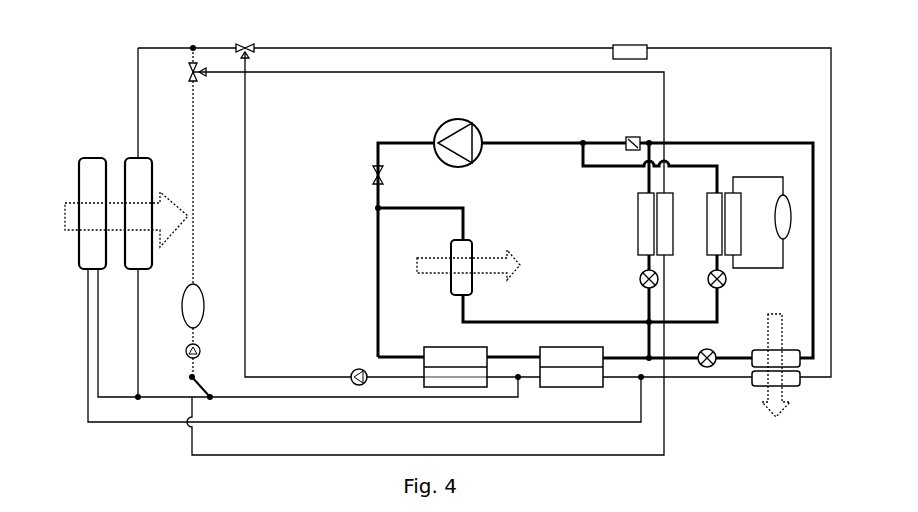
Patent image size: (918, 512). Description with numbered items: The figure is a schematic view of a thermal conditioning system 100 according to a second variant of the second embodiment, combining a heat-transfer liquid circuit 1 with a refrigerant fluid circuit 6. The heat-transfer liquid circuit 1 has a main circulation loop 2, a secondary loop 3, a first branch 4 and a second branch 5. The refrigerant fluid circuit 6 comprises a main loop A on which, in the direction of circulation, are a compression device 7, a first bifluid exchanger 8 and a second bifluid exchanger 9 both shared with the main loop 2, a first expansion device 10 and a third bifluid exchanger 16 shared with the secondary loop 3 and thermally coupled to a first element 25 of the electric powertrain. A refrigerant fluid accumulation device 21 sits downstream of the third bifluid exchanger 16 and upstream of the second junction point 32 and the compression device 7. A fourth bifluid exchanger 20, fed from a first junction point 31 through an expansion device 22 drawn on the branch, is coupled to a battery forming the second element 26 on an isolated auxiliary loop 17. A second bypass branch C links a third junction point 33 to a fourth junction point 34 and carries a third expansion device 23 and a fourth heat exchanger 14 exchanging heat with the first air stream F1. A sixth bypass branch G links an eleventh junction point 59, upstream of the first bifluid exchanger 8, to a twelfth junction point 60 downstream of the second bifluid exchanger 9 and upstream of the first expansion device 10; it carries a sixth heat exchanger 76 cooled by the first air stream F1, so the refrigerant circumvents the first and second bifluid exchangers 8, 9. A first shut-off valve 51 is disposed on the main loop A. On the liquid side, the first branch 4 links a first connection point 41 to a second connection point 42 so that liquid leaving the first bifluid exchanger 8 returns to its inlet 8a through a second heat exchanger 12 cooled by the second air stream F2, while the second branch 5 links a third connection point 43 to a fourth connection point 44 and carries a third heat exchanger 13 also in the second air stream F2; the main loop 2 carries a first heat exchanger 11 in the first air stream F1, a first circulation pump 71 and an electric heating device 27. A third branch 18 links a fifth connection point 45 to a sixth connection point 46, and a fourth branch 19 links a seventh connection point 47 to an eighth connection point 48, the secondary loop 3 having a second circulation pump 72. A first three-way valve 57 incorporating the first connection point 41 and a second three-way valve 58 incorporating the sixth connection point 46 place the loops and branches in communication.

The thermal conditioning system 100 is at (420, 32).
The heat-transfer liquid circuit 1 is at (672, 84).
The main circulation loop 2 is at (829, 82).
The secondary loop 3 is at (195, 113).
The first branch 4 is at (136, 95).
The second branch 5 is at (90, 335).
The refrigerant fluid circuit 6 is at (500, 150).
The compression device 7 is at (455, 140).
The first bifluid exchanger 8 is at (605, 168).
The inlet of the first bifluid exchanger 8a is at (490, 377).
The second bifluid exchanger 9 is at (590, 355).
The first expansion device 10 is at (640, 279).
The first heat exchanger 11 is at (795, 382).
The second heat exchanger 12 is at (140, 168).
The third heat exchanger 13 is at (93, 187).
The fourth heat exchanger 14 is at (790, 360).
The third bifluid exchanger 16 is at (636, 225).
The auxiliary loop 17 is at (760, 268).
The third branch 18 is at (188, 70).
The fourth branch 19 is at (204, 387).
The fourth bifluid exchanger 20 is at (715, 230).
The refrigerant fluid accumulation device 21 is at (626, 140).
The expansion valve 22 is at (710, 272).
The third expansion device 23 is at (712, 349).
The first element of the electric powertrain 25 is at (190, 298).
The second element of the electric powertrain 26 is at (783, 226).
The electric heating device 27 is at (650, 52).
The first junction point 31 is at (652, 318).
The second junction point 32 is at (581, 147).
The third junction point 33 is at (652, 356).
The fourth junction point 34 is at (649, 139).
The first connection point 41 is at (250, 46).
The second connection point 42 is at (520, 380).
The third connection point 43 is at (138, 393).
The fourth connection point 44 is at (640, 380).
The fifth connection point 45 is at (190, 46).
The sixth connection point 46 is at (190, 78).
The seventh connection point 47 is at (189, 378).
The eighth connection point 48 is at (213, 399).
The first shut-off valve 51 is at (384, 175).
The first three-way valve 57 is at (250, 56).
The second three-way valve 58 is at (201, 76).
The eleventh junction point 59 is at (376, 208).
The twelfth junction point 60 is at (640, 318).
The first heat-transfer liquid circulation pump 71 is at (351, 376).
The second heat-transfer liquid circulation pump 72 is at (197, 346).
The sixth heat exchanger 76 is at (485, 283).
The main loop A is at (375, 290).
The second bypass branch C is at (815, 265).
The sixth bypass branch G is at (465, 225).
The first air stream F1 is at (440, 262).
The second air stream F2 is at (75, 215).